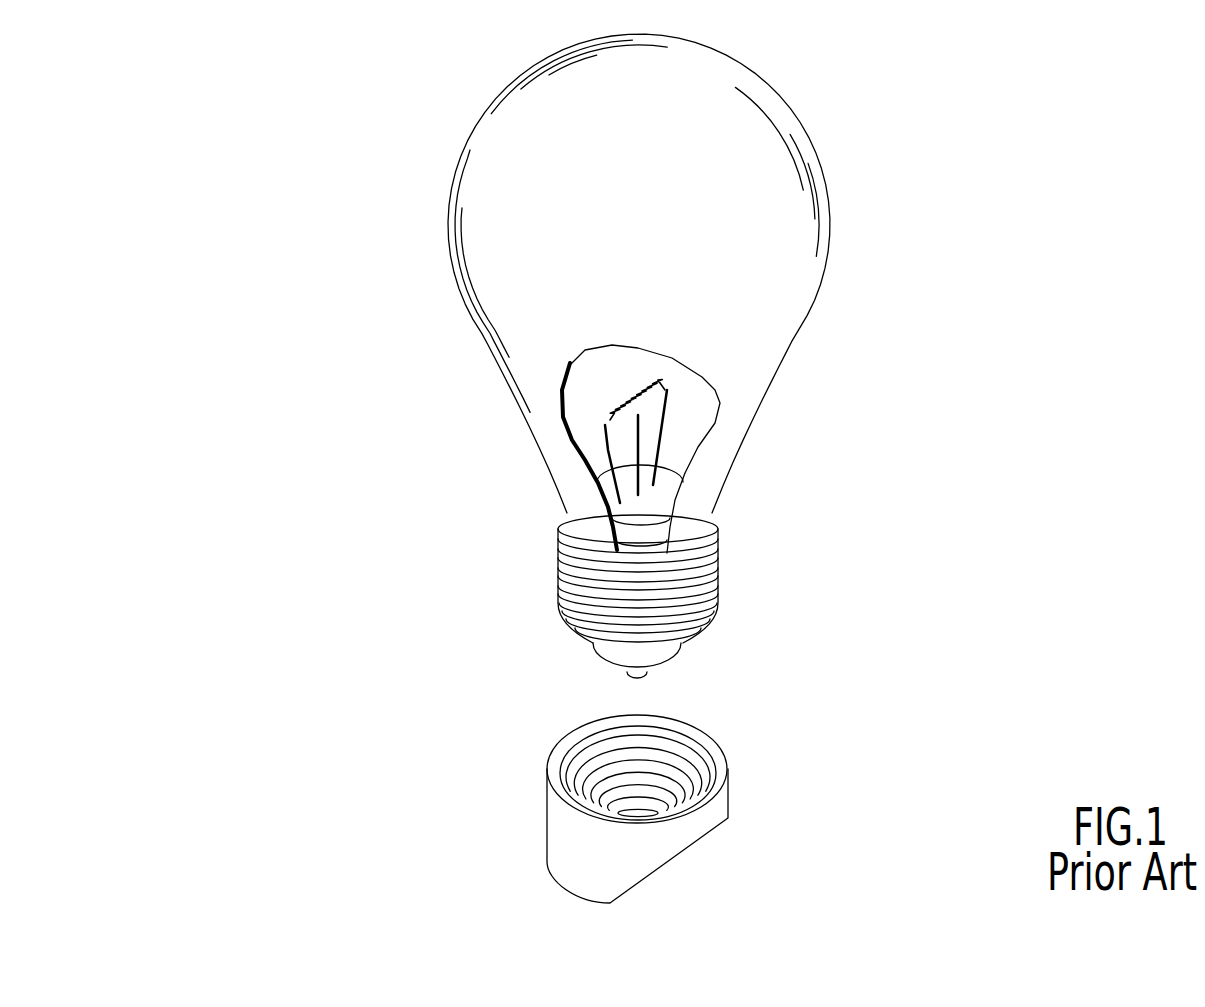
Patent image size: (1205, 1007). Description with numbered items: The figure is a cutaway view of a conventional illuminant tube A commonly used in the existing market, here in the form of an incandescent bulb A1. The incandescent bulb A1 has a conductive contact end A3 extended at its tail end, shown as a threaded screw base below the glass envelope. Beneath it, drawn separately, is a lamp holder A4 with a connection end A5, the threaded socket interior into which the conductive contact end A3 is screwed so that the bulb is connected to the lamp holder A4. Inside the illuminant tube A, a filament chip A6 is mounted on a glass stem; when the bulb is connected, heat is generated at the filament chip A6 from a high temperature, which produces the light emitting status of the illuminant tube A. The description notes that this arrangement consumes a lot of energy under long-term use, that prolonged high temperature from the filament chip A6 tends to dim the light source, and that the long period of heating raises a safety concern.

The illuminant tube A is at (890, 265).
The incandescent bulb A1 is at (525, 157).
The conductive contact end A3 is at (681, 595).
The lamp holder A4 is at (640, 863).
The connection end A5 is at (590, 752).
The filament chip A6 is at (565, 400).